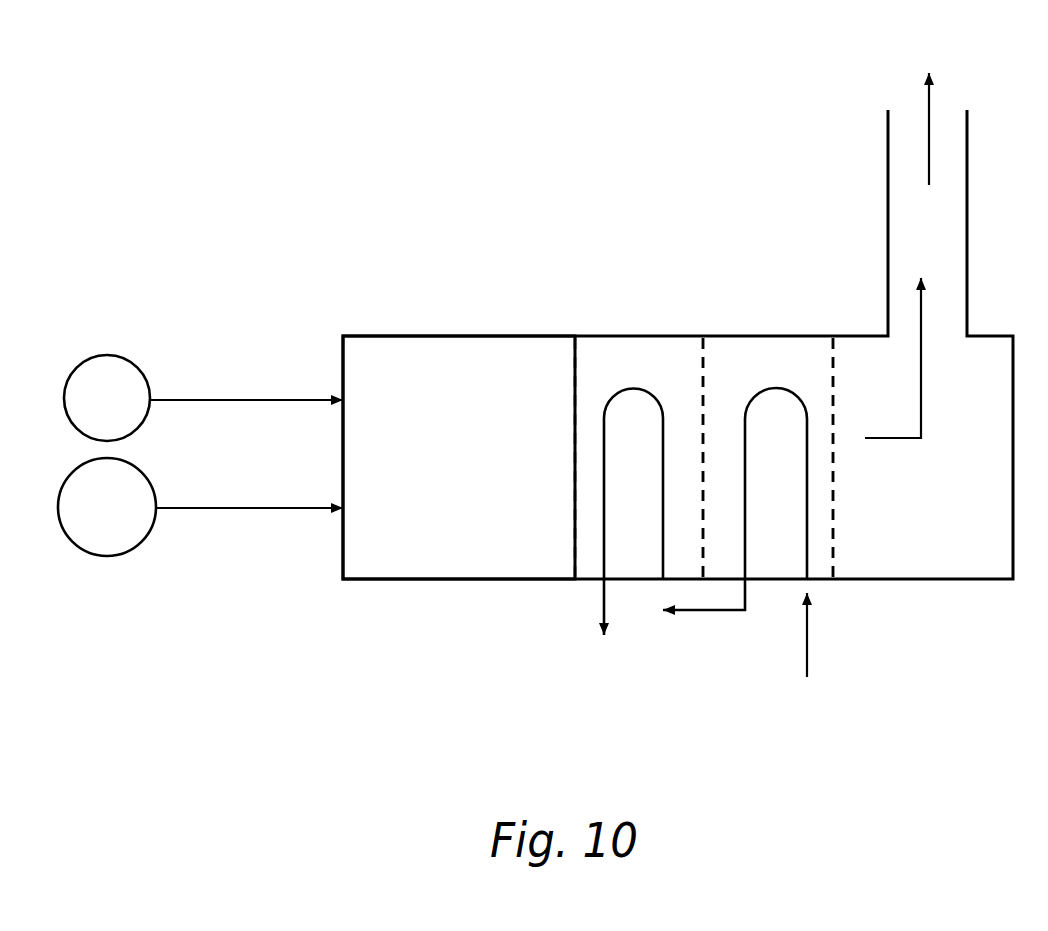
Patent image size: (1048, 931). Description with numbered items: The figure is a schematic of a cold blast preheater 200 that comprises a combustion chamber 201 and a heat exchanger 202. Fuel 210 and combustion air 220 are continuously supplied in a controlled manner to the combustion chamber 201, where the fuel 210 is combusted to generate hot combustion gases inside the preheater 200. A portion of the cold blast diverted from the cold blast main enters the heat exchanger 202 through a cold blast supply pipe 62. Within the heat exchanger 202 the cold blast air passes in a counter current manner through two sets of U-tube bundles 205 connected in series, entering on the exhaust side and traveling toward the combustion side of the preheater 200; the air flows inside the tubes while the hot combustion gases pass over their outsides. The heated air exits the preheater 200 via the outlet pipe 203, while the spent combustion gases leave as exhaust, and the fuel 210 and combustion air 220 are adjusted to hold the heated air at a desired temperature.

The preheater 200 is at (582, 138).
The combustion chamber 201 is at (438, 372).
The heat exchanger 202 is at (735, 378).
The outlet pipe 203 is at (603, 590).
The U-tube bundles 205 is at (633, 388).
The fuel 210 is at (108, 355).
The combustion air 220 is at (105, 557).
The cold blast supply pipe 62 is at (808, 632).